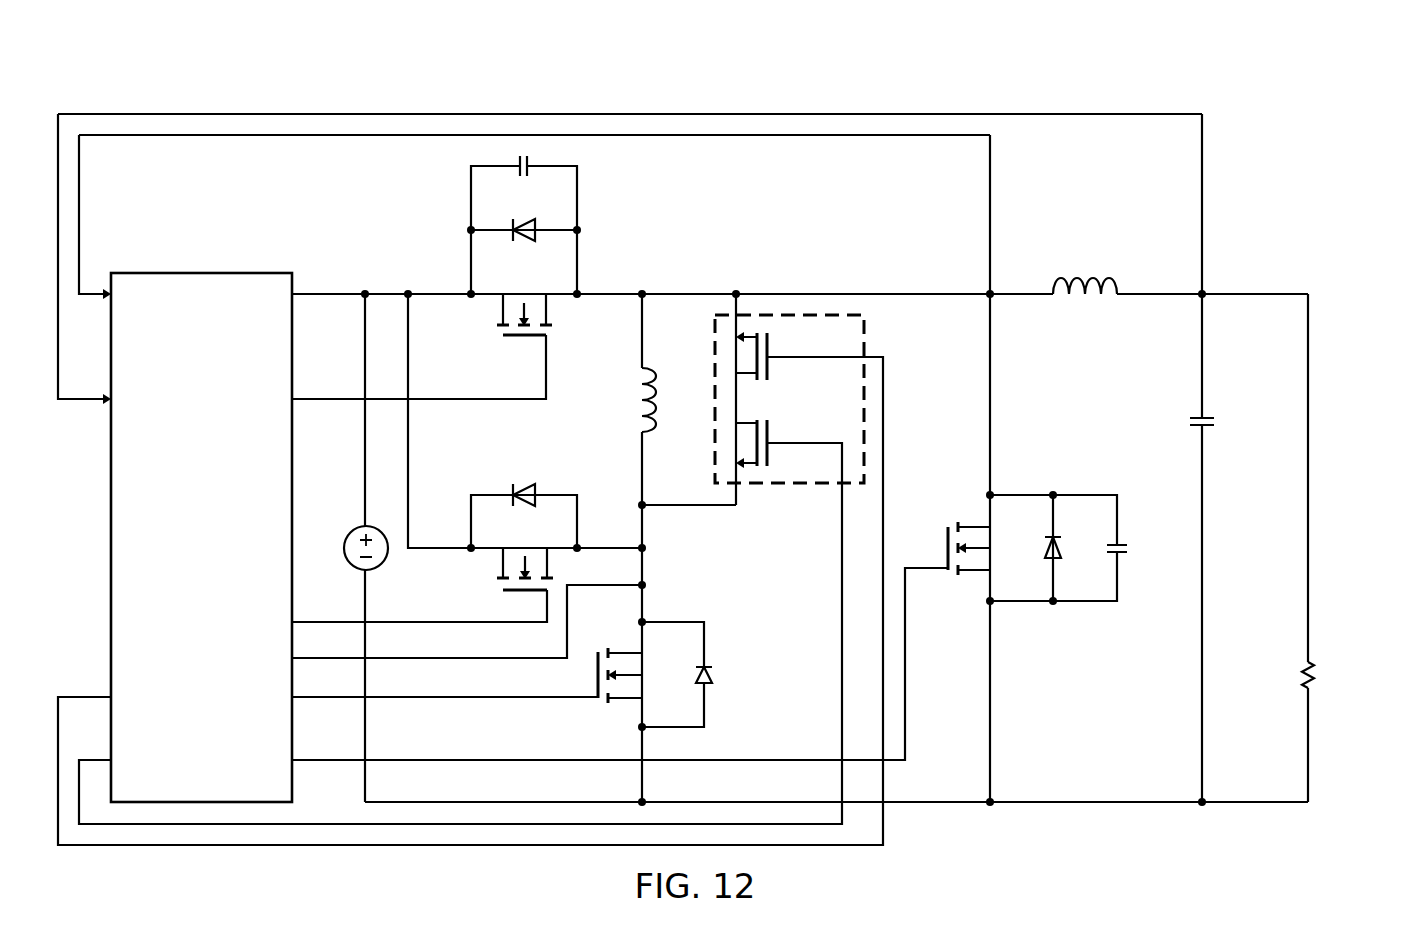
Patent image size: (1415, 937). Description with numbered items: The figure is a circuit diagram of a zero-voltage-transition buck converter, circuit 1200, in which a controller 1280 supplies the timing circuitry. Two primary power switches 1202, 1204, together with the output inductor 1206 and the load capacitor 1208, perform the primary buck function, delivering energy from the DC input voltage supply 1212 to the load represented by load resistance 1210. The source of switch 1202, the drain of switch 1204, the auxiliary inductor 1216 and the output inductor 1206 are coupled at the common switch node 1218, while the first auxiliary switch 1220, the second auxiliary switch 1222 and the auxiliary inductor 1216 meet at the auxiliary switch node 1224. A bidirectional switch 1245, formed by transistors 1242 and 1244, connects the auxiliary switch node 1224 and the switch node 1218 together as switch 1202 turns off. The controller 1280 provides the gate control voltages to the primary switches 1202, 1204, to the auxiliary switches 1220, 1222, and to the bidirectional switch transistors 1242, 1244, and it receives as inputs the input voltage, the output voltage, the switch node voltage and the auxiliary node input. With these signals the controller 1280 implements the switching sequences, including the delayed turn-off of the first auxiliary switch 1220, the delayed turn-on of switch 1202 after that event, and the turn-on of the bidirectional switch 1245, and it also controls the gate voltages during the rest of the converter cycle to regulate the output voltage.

The circuit 1200 is at (963, 70).
The switch 1202 is at (508, 340).
The switch 1204 is at (942, 537).
The inductor 1206 is at (1112, 281).
The load capacitor 1208 is at (1213, 420).
The load resistance 1210 is at (1315, 676).
The input voltage supply 1212 is at (355, 567).
The inductor 1216 is at (657, 370).
The switch node 1218 is at (637, 300).
The switch 1220 is at (512, 600).
The switch 1222 is at (598, 658).
The auxiliary switch node 1224 is at (638, 544).
The transistor 1242 is at (772, 347).
The transistor 1244 is at (772, 432).
The bidirectional switch 1245 is at (799, 431).
The controller 1280 is at (176, 567).